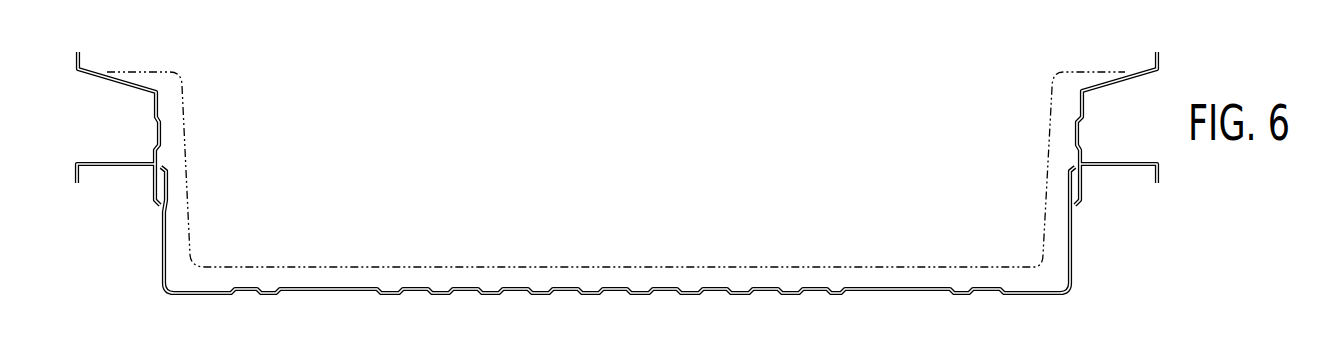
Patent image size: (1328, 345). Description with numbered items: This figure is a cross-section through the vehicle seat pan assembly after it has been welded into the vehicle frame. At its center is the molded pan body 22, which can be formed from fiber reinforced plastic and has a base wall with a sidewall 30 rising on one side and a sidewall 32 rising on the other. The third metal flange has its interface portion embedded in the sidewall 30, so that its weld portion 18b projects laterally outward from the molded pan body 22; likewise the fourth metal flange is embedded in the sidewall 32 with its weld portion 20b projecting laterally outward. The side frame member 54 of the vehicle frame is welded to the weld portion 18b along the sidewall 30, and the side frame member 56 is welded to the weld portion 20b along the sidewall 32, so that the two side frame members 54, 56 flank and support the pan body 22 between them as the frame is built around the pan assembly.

The molded pan body 22 is at (634, 254).
The sidewall 30 is at (167, 242).
The sidewall 32 is at (1072, 245).
The weld portion 18b is at (155, 167).
The fourth metal flange weld portion 20b is at (1092, 173).
The side frame member 54 is at (122, 80).
The side frame member 56 is at (1118, 80).